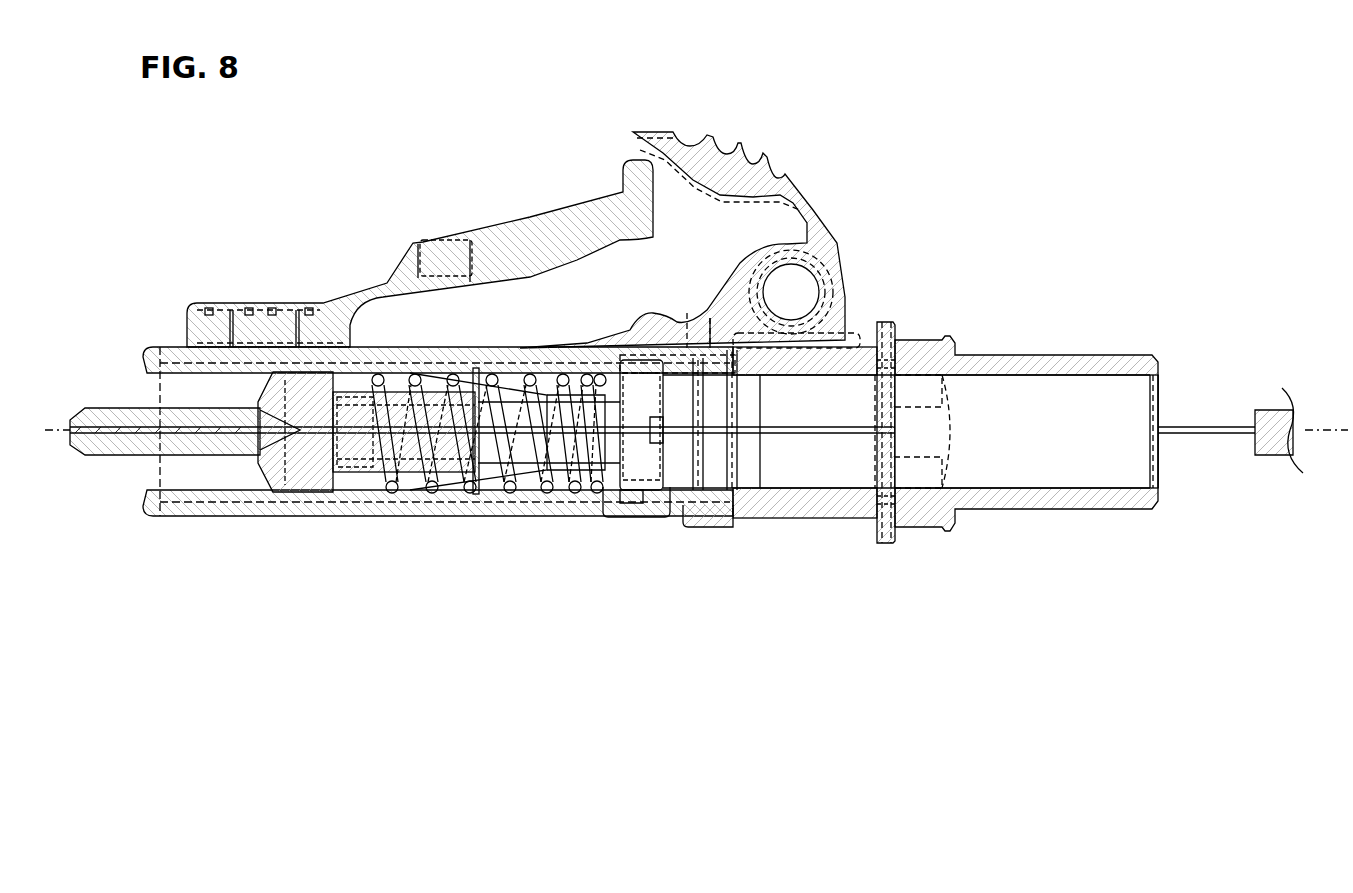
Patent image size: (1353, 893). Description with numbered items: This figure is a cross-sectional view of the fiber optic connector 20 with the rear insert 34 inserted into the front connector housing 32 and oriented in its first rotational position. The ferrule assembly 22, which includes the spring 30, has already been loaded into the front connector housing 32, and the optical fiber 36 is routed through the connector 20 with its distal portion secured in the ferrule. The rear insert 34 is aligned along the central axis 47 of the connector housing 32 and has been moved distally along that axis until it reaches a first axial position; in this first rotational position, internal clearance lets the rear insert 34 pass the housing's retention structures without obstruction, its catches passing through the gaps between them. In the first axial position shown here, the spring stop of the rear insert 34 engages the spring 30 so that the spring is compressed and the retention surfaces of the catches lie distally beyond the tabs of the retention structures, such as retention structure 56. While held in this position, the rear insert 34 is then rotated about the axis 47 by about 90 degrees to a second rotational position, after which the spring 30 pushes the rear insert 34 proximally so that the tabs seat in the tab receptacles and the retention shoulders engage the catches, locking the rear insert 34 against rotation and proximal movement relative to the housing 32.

The fiber optic connector 20 is at (1078, 165).
The ferrule assembly 22 is at (110, 457).
The spring 30 is at (512, 493).
The front connector housing 32 is at (415, 517).
The rear insert 34 is at (1035, 353).
The optical fiber 36 is at (195, 437).
The central axis 47 is at (1315, 430).
The retention structure 56 is at (727, 468).
The housing coupling section 90 is at (738, 540).